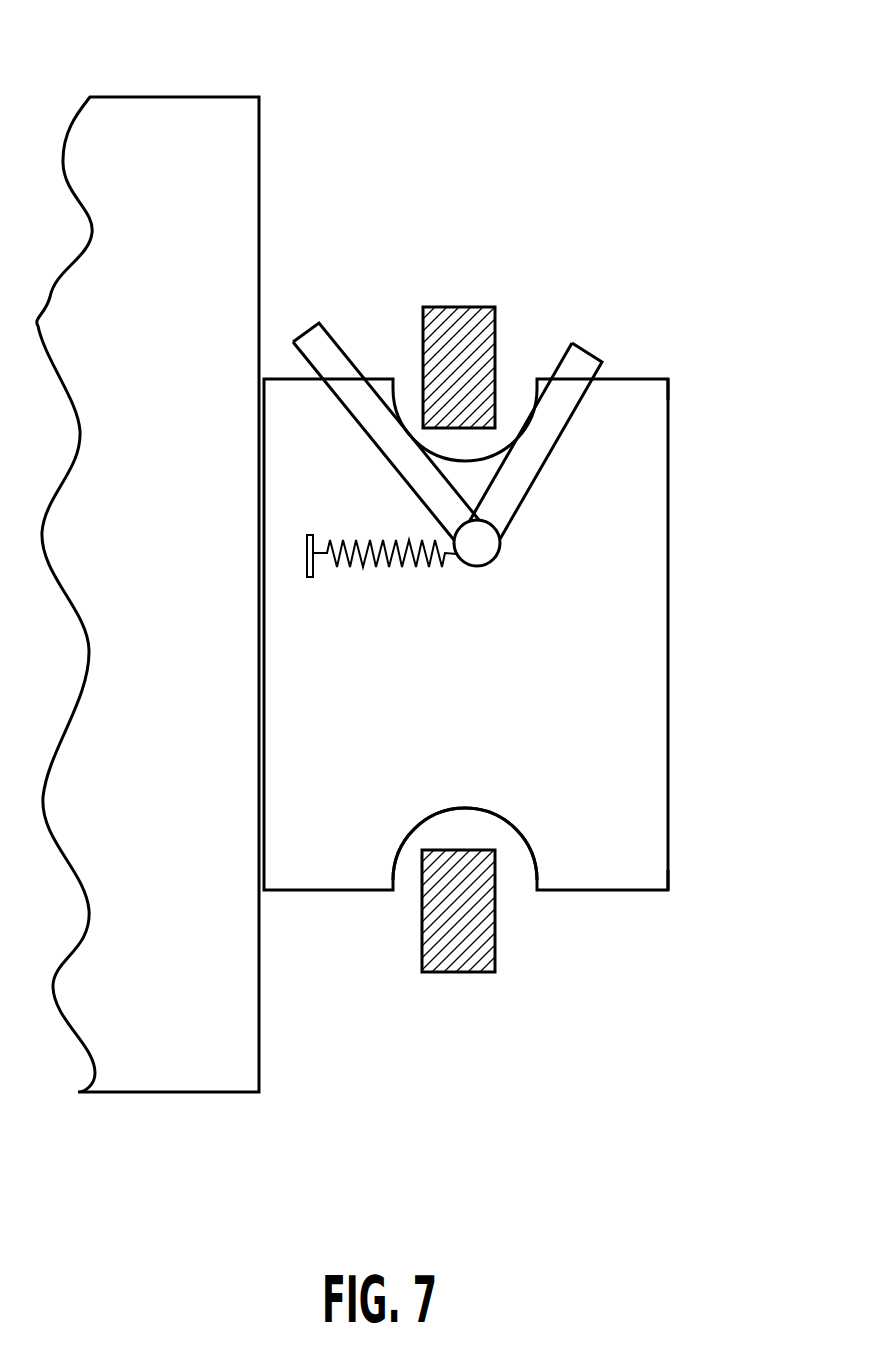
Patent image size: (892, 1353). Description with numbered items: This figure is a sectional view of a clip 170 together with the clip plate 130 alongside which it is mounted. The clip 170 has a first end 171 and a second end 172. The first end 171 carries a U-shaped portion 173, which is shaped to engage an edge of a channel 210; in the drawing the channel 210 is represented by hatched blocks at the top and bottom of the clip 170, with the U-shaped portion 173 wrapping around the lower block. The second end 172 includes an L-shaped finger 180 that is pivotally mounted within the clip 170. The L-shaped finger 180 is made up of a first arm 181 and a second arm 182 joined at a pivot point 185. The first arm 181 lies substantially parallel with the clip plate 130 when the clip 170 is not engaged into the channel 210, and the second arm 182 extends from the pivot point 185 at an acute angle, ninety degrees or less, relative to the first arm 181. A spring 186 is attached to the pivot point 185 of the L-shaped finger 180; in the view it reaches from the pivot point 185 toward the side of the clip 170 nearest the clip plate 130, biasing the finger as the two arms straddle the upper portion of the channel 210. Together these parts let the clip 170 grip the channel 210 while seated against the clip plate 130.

The clip plate 130 is at (170, 160).
The clip 170 is at (598, 667).
The first end 171 is at (695, 889).
The second end 172 is at (686, 408).
The U-shaped portion 173 is at (463, 802).
The L-shaped finger 180 is at (447, 442).
The first arm 181 is at (403, 445).
The second arm 182 is at (536, 446).
The pivot point 185 is at (477, 545).
The spring 186 is at (358, 567).
The channel 210 is at (465, 307).